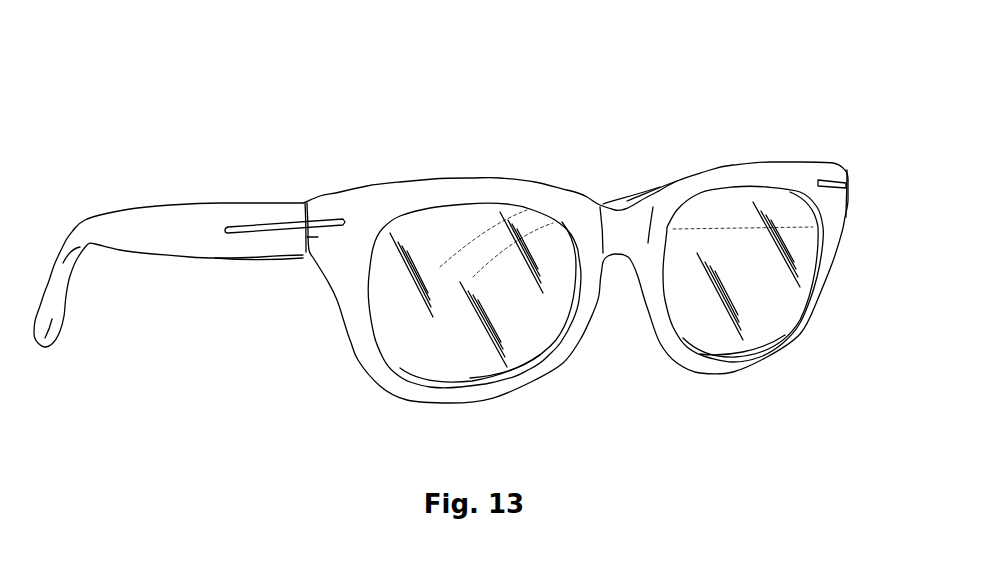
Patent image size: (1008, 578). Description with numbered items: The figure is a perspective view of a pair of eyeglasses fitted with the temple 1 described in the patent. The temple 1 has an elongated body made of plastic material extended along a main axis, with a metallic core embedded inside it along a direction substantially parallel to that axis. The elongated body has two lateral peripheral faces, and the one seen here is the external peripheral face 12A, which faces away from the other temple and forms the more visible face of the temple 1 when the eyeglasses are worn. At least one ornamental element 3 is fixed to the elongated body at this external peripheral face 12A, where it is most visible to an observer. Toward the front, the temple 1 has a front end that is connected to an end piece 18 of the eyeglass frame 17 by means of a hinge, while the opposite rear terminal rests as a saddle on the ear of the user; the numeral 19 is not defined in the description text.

The temple 1 is at (160, 233).
The ornamental element 3 is at (252, 227).
The external peripheral face 12A is at (190, 237).
The eyeglass frame 17 is at (458, 205).
The end piece 18 is at (318, 237).
The frame front 19 is at (312, 197).